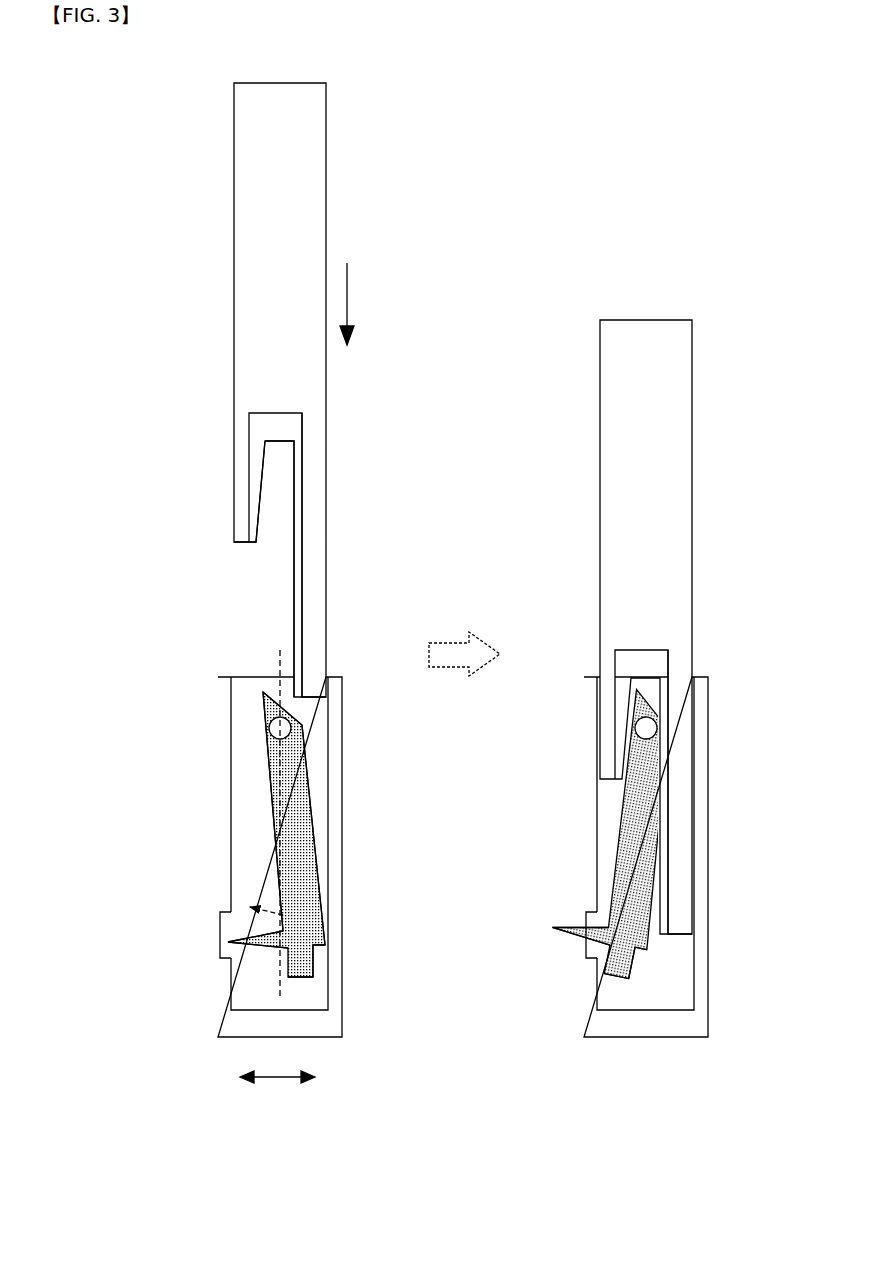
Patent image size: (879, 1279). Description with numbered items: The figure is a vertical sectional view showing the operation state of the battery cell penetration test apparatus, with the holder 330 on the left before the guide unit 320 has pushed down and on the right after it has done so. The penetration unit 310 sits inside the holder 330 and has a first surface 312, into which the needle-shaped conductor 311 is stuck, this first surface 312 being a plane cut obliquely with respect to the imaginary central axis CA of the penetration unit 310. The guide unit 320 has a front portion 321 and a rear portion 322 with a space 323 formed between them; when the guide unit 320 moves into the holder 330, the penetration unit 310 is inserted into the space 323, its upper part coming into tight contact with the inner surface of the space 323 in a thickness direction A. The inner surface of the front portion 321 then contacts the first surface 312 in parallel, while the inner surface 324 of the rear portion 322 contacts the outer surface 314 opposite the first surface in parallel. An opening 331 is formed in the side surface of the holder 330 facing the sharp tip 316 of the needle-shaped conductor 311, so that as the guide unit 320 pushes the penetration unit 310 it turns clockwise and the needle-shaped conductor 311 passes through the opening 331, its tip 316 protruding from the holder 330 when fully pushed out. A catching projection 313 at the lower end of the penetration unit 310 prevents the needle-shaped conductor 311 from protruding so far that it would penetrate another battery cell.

The penetration unit 310 is at (253, 729).
The needle-shaped conductor 311 is at (255, 948).
The first surface 312 is at (268, 790).
The catching projection 313 is at (313, 958).
The outer surface 314 is at (312, 764).
The sharp tip 316 is at (540, 926).
The guide unit 320 is at (233, 232).
The front portion 321 is at (226, 415).
The rear portion 322 is at (347, 415).
The space 323 is at (275, 520).
The inner surface of the rear portion 324 is at (290, 592).
The holder 330 is at (218, 838).
The opening 331 is at (212, 930).
The imaginary central axis CA is at (280, 660).
The thickness direction A is at (277, 1094).